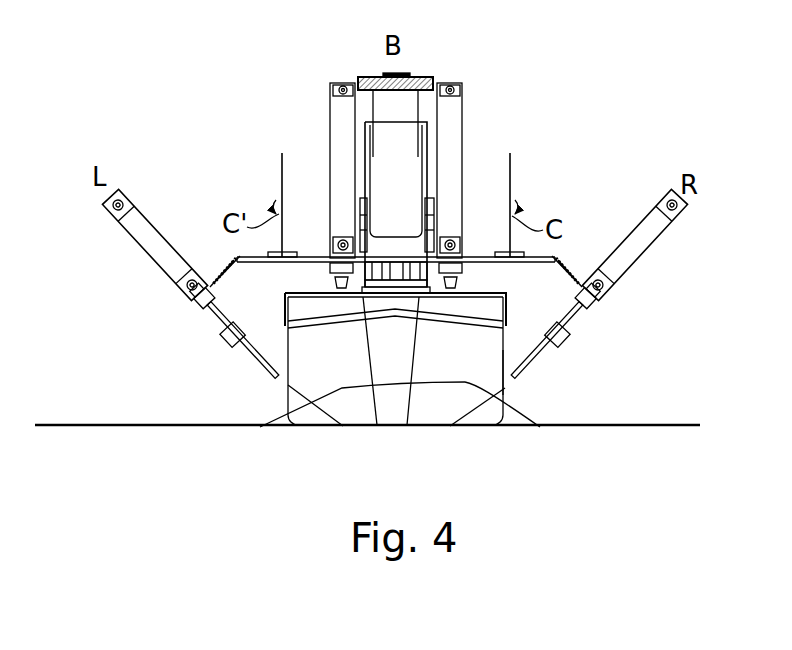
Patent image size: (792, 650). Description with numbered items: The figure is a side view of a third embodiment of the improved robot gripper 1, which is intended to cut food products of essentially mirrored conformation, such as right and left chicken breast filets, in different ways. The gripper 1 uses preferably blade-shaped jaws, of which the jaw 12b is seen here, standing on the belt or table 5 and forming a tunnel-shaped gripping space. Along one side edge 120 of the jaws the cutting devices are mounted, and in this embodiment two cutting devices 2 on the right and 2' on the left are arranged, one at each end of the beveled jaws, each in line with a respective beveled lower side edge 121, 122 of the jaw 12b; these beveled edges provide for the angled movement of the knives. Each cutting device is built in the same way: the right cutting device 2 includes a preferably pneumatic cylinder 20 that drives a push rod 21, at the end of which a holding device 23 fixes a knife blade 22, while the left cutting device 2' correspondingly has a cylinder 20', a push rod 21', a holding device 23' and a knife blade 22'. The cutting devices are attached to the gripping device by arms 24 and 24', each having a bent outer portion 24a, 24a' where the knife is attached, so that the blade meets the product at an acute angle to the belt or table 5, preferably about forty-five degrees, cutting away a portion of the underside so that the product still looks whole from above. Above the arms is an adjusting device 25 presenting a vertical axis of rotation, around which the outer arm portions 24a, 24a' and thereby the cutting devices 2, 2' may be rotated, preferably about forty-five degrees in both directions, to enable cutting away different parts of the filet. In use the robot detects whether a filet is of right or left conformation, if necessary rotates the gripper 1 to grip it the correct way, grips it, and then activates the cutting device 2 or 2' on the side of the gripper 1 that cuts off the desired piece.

The robot gripper 1 is at (517, 103).
The cutting device 2 is at (625, 292).
The cutting device 2' is at (156, 295).
The belt or table 5 is at (133, 425).
The jaw 12b is at (457, 365).
The cylinder 20 is at (634, 244).
The cylinder 20' is at (154, 244).
The push rod 21 is at (588, 295).
The push rod 21' is at (201, 295).
The knife blade 22 is at (547, 340).
The knife blade 22' is at (243, 340).
The holding device 23 is at (557, 334).
The holding device 23' is at (232, 334).
The arm 24 is at (475, 192).
The arm 24' is at (316, 192).
The bent outer arm portion 24a is at (596, 231).
The bent outer arm portion 24a' is at (202, 231).
The adjusting device 25 is at (297, 194).
The side edge 120 is at (508, 350).
The beveled lower side edge 121 is at (477, 402).
The beveled lower side edge 122 is at (312, 405).